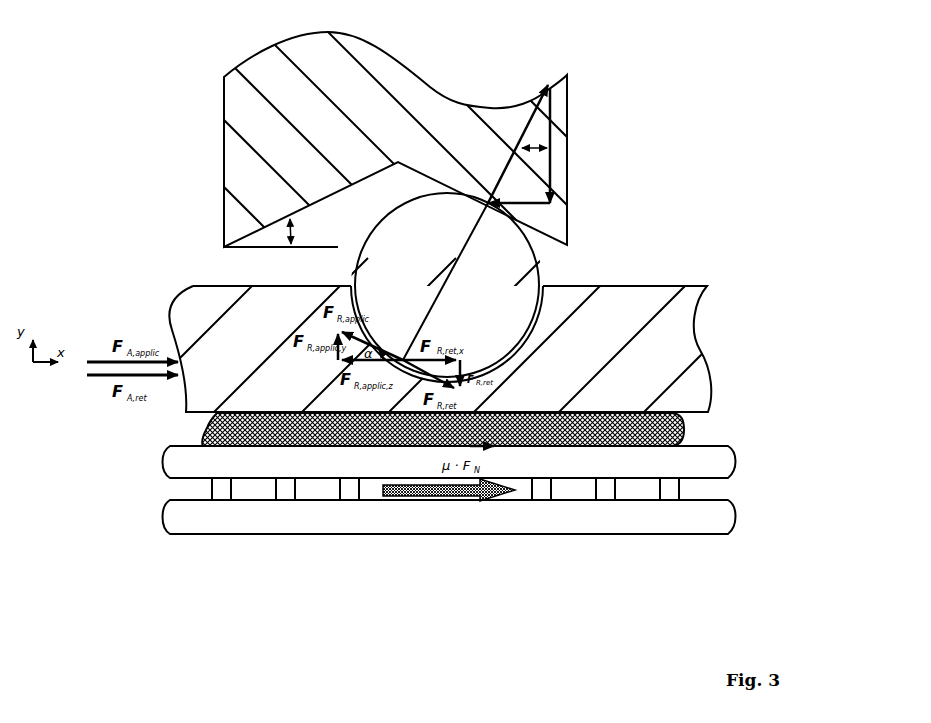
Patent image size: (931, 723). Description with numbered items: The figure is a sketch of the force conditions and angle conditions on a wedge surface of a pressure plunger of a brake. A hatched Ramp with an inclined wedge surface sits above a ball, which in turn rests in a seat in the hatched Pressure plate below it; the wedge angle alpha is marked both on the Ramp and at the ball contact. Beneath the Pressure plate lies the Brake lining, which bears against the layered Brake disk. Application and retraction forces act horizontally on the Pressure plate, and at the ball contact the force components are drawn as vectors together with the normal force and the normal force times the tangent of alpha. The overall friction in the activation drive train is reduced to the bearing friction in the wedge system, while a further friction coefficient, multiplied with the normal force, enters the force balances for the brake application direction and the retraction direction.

The ramp Ramp is at (567, 157).
The pressure plate Pressure plate is at (697, 322).
The brake lining Brake lining is at (680, 430).
The brake disk Brake disk is at (683, 492).